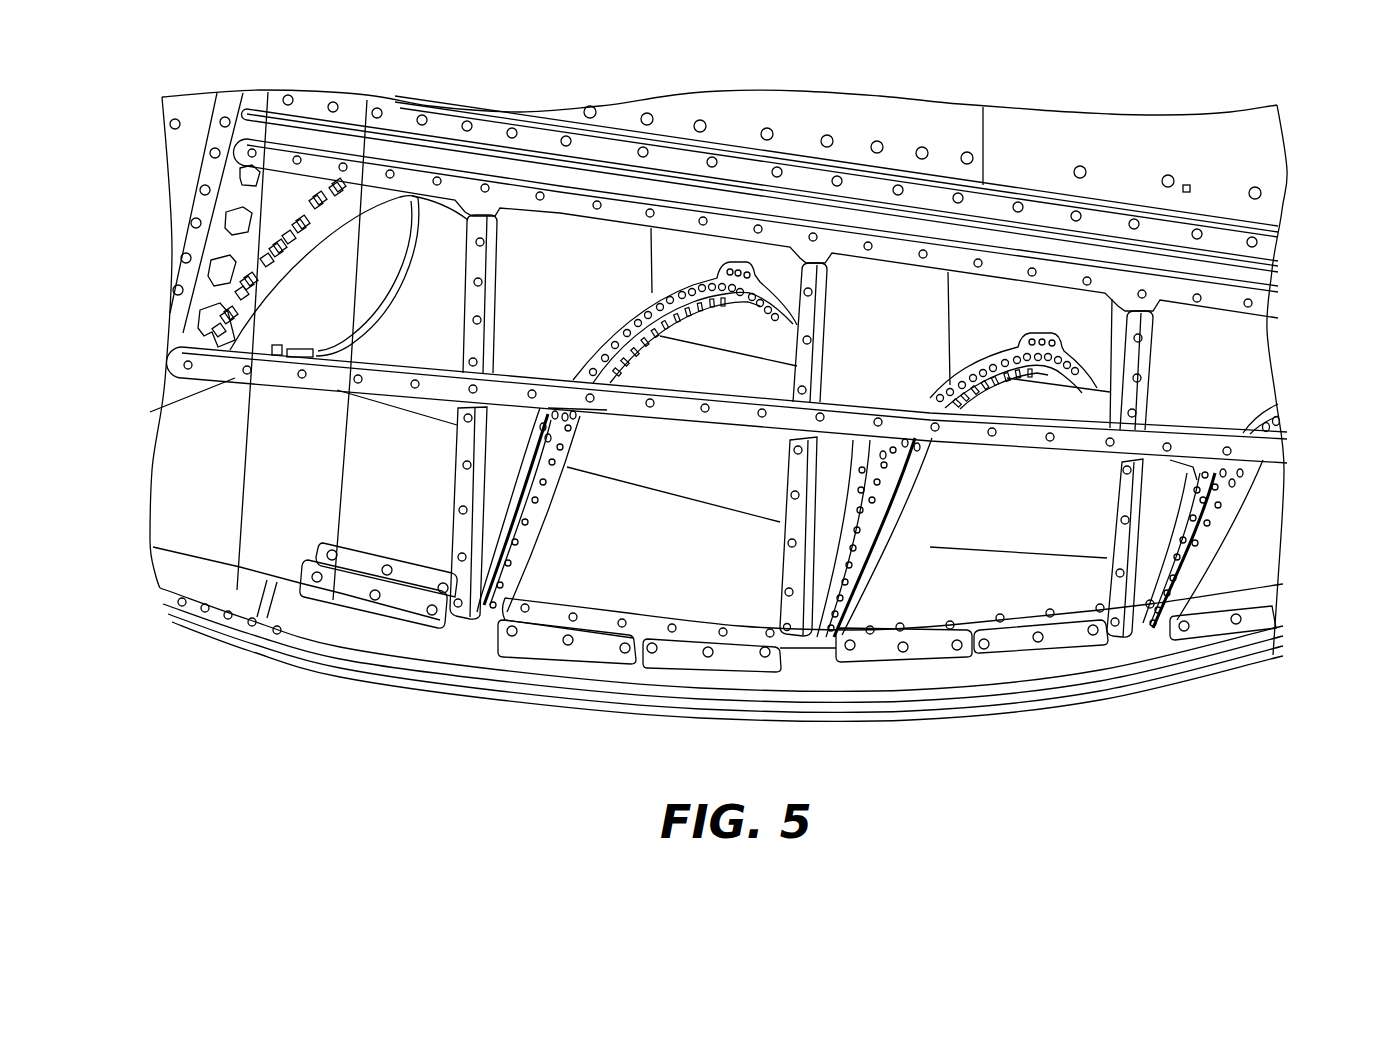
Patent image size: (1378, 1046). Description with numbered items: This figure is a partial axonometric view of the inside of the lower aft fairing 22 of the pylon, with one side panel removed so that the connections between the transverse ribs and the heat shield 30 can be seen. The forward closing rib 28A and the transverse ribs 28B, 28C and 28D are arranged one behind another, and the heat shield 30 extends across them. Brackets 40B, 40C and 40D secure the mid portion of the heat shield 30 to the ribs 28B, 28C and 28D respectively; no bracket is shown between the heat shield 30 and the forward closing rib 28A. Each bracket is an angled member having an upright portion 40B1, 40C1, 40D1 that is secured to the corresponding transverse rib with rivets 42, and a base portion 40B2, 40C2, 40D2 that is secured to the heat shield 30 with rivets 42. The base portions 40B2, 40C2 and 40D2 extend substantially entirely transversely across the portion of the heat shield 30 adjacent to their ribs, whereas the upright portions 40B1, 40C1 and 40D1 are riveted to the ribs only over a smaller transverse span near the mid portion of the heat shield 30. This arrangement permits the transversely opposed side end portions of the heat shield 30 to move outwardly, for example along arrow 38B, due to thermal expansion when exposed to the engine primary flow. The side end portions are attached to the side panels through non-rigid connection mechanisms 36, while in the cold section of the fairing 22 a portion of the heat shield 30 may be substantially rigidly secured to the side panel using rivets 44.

The lower aft fairing 22 is at (386, 84).
The forward closing rib 28A is at (305, 207).
The transverse rib 28B is at (614, 274).
The transverse rib 28C is at (927, 315).
The transverse rib 28D is at (1248, 370).
The heat shield 30 is at (657, 557).
The connection mechanism 36 is at (348, 597).
The arrow 38B is at (533, 717).
The bracket 40B is at (478, 613).
The upright portion 40B1 is at (605, 348).
The base portion 40B2 is at (643, 352).
The bracket 40C is at (813, 657).
The upright portion 40C1 is at (967, 380).
The base portion 40C2 is at (1010, 378).
The bracket 40D is at (1137, 631).
The upright portion 40D1 is at (1243, 431).
The base portion 40D2 is at (1203, 542).
The rivet 42 is at (547, 473).
The rivet 44 is at (228, 622).